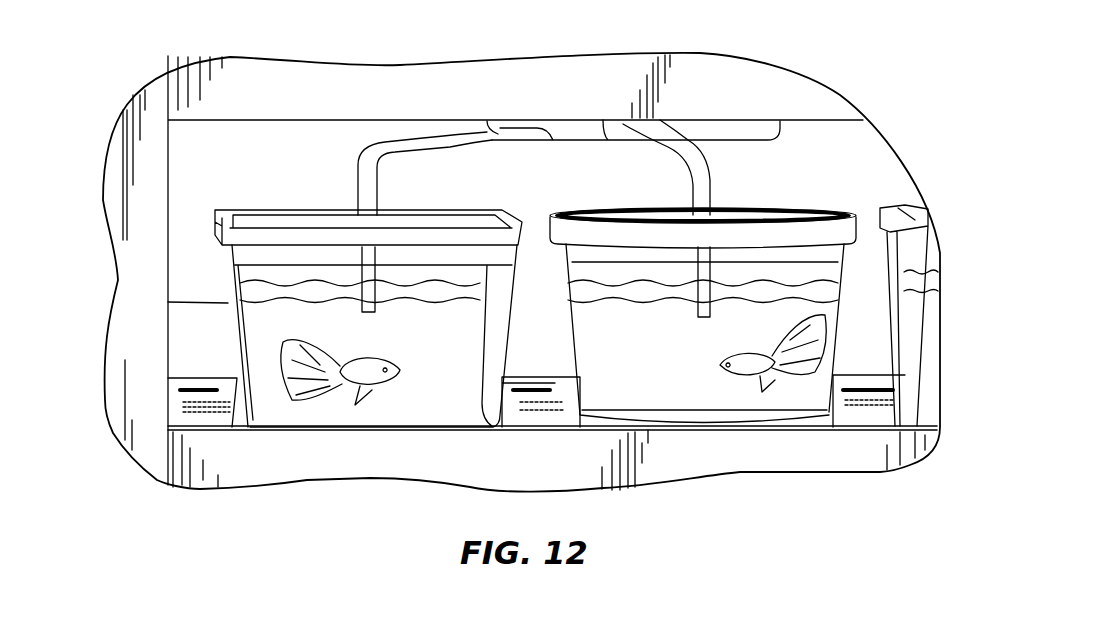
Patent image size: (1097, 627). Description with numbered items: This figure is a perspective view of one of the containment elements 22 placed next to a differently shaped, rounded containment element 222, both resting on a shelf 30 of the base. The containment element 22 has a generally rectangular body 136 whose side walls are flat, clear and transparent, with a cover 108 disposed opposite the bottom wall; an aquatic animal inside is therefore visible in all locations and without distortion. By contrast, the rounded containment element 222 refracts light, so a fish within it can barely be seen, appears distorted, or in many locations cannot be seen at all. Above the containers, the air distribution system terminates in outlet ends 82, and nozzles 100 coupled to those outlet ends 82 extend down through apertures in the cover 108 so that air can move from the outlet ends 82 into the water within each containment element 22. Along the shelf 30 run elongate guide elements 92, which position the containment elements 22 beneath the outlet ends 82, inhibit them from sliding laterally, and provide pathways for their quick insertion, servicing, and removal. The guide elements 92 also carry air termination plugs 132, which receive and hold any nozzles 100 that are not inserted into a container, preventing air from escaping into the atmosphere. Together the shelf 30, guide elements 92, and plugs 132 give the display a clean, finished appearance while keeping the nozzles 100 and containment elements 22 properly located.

The shelf 30 is at (293, 457).
The guide element 92 is at (175, 404).
The air termination plug 132 is at (168, 379).
The cover 108 is at (222, 198).
The containment element 22 is at (308, 200).
The body 136 is at (254, 327).
The outlet end 82 is at (420, 153).
The nozzle 100 is at (378, 311).
The rounded containment element 222 is at (766, 199).